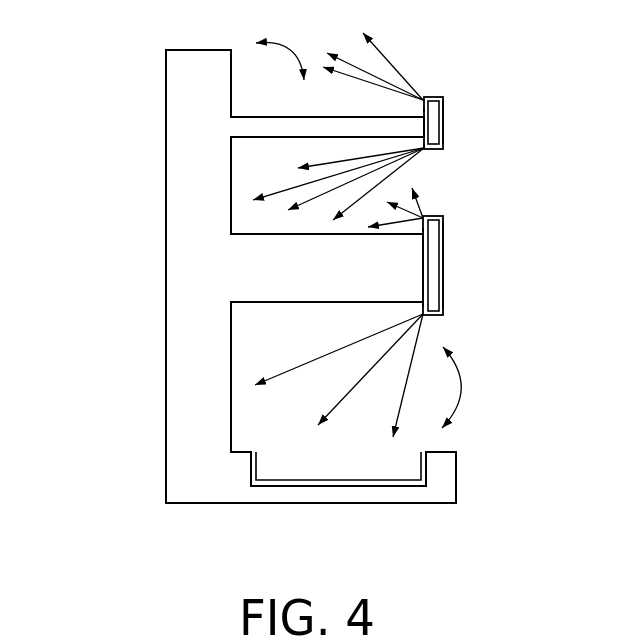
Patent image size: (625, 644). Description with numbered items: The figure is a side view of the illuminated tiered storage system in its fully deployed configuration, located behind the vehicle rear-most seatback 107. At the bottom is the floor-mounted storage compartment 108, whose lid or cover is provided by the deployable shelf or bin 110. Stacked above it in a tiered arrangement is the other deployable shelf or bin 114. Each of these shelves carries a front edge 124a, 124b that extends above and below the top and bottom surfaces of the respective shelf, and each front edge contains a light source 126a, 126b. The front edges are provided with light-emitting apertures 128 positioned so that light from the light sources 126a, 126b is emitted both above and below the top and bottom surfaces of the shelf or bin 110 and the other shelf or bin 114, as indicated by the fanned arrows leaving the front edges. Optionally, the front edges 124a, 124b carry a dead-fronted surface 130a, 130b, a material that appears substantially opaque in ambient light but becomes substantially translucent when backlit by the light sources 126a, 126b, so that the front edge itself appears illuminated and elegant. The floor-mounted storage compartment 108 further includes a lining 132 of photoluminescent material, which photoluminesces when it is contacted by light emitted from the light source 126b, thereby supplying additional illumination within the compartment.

The vehicle rear-most seatback 107 is at (188, 183).
The floor-mounted storage compartment 108 is at (443, 473).
The deployable shelf or bin 110 is at (267, 292).
The other deployable shelf or bin 114 is at (267, 127).
The front edge 124a is at (437, 97).
The front edge 124b is at (437, 216).
The light source 126a is at (433, 113).
The light source 126b is at (433, 298).
The light-emitting apertures 128 is at (424, 146).
The dead-fronted surface 130a is at (443, 133).
The dead-fronted surface 130b is at (443, 268).
The lining 132 is at (323, 482).